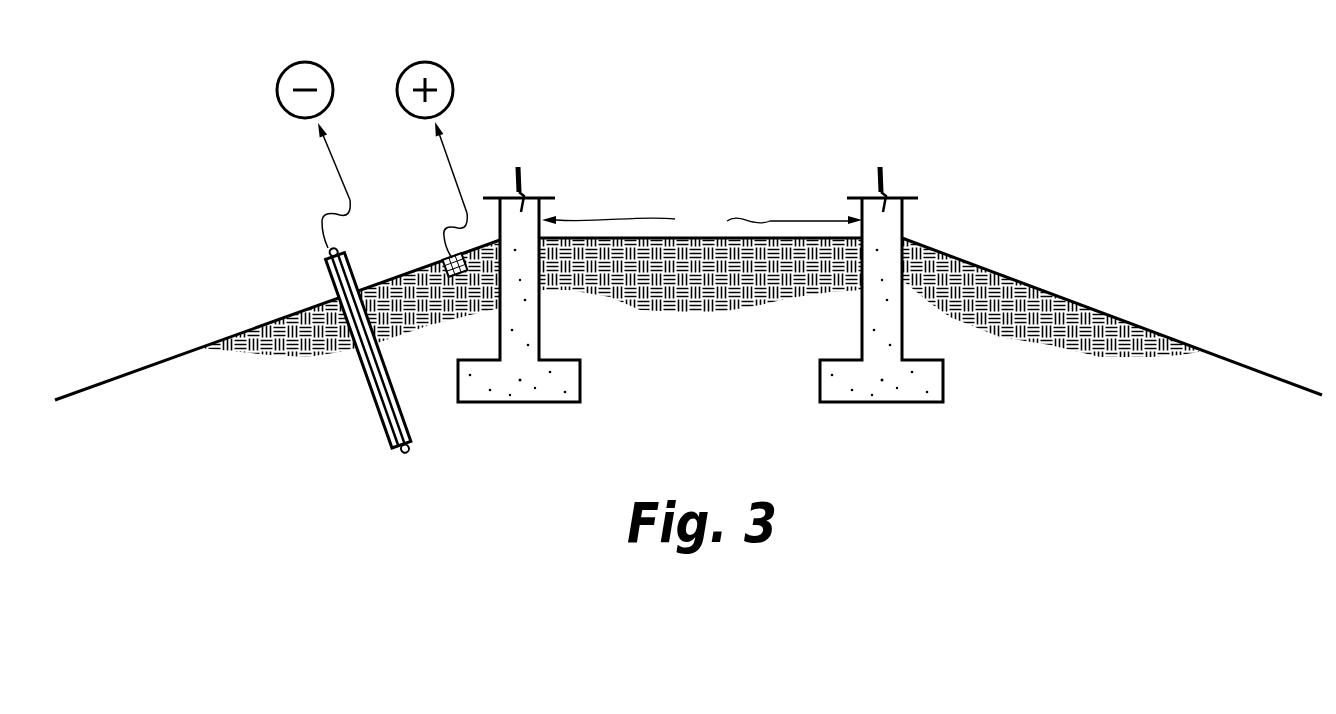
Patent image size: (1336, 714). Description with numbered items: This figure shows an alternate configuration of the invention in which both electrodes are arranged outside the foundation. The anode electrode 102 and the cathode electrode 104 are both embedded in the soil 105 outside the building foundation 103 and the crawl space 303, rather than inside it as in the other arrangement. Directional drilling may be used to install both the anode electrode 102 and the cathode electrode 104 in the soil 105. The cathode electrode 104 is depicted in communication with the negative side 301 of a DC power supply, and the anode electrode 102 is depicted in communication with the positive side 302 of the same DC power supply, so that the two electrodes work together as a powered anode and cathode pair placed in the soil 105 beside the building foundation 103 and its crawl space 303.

The anode electrode 102 is at (448, 258).
The building foundation 103 is at (548, 197).
The cathode electrode 104 is at (330, 252).
The soil 105 is at (282, 320).
The negative side 301 is at (280, 106).
The positive side 302 is at (453, 87).
The crawl space 303 is at (702, 213).